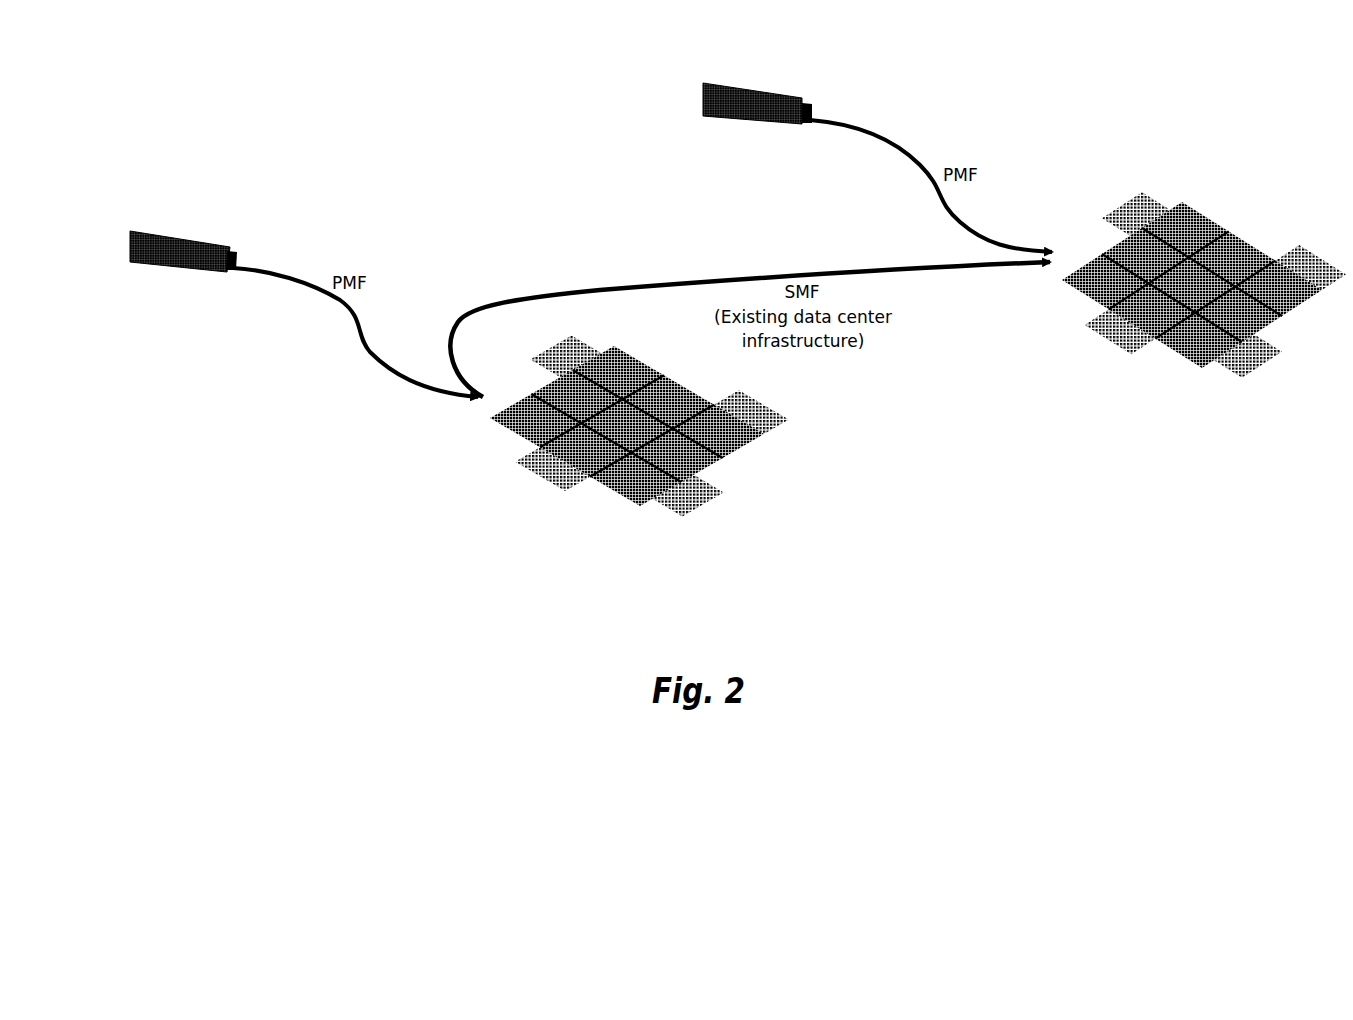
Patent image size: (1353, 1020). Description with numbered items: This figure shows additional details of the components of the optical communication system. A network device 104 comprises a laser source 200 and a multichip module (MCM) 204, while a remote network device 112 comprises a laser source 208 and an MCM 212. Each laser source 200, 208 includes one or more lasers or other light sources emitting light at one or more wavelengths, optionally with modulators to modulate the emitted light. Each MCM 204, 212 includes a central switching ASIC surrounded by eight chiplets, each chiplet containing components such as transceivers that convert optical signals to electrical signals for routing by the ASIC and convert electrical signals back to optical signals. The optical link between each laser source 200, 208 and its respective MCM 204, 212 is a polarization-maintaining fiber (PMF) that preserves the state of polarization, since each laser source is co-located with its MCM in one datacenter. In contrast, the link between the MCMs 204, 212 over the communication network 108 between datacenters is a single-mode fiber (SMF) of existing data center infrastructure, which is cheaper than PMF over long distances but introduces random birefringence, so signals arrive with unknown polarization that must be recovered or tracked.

The network device 104 is at (250, 135).
The communication network 108 is at (545, 186).
The network device 112 is at (1217, 88).
The laser source 200 is at (192, 261).
The multichip module (MCM) 204 is at (530, 450).
The laser source 208 is at (790, 97).
The multichip module (MCM) 212 is at (1167, 347).